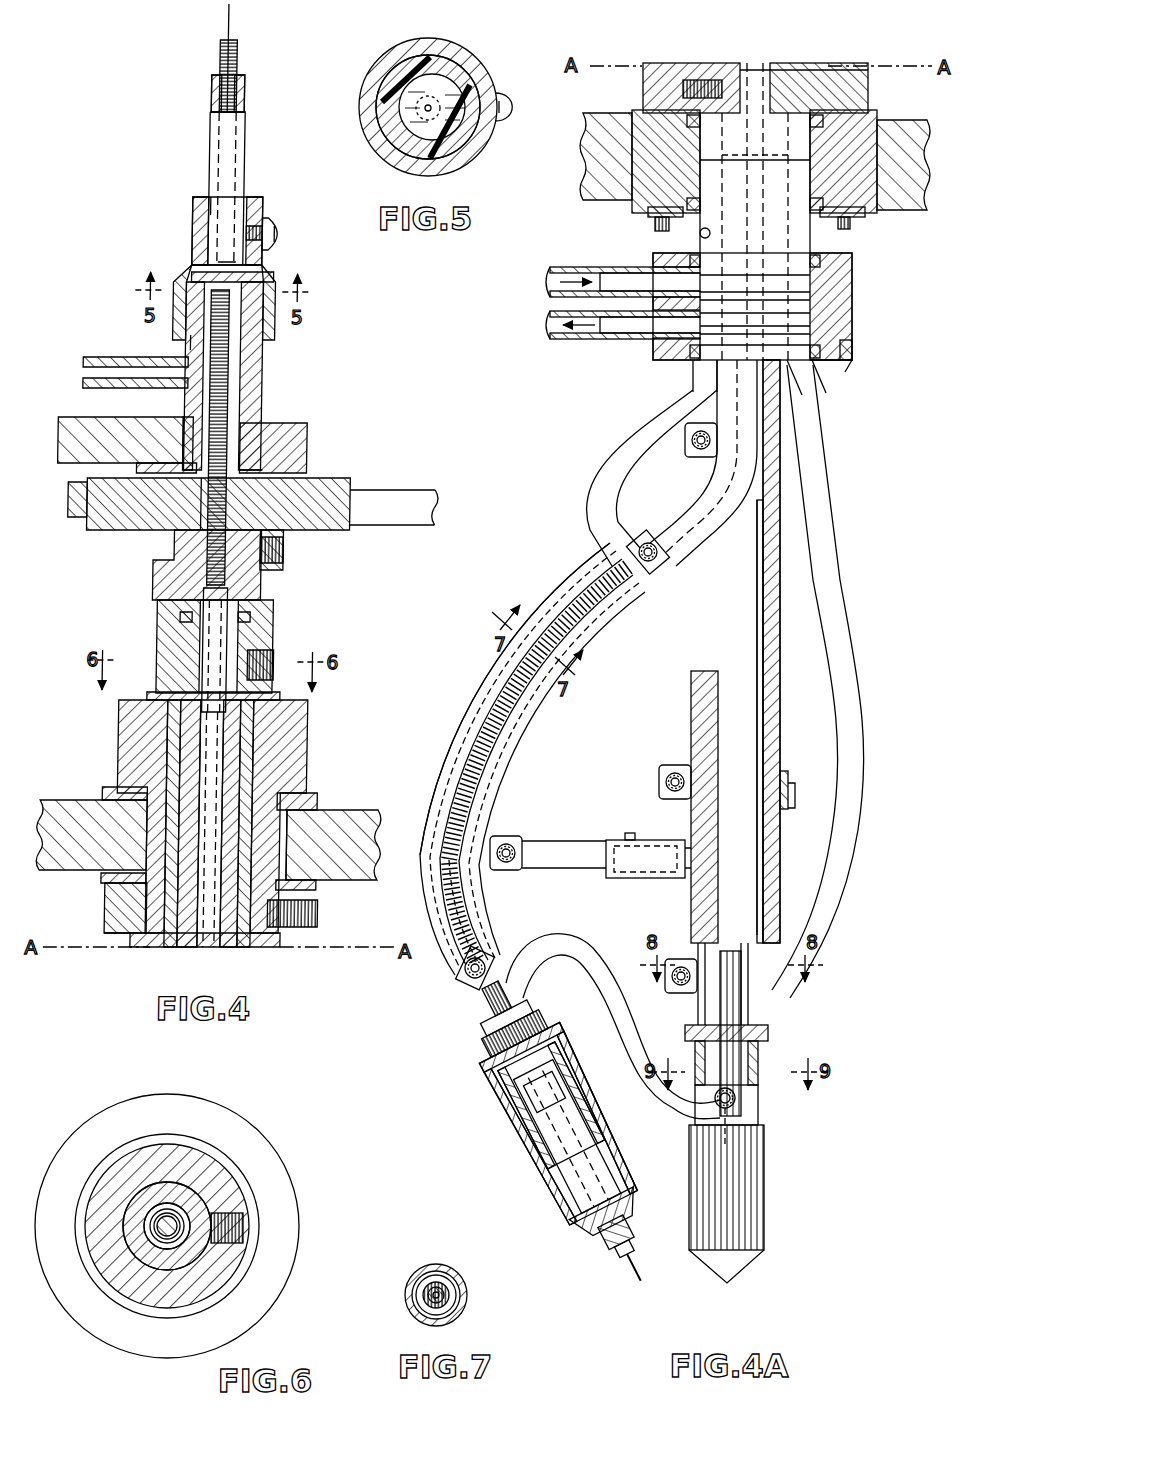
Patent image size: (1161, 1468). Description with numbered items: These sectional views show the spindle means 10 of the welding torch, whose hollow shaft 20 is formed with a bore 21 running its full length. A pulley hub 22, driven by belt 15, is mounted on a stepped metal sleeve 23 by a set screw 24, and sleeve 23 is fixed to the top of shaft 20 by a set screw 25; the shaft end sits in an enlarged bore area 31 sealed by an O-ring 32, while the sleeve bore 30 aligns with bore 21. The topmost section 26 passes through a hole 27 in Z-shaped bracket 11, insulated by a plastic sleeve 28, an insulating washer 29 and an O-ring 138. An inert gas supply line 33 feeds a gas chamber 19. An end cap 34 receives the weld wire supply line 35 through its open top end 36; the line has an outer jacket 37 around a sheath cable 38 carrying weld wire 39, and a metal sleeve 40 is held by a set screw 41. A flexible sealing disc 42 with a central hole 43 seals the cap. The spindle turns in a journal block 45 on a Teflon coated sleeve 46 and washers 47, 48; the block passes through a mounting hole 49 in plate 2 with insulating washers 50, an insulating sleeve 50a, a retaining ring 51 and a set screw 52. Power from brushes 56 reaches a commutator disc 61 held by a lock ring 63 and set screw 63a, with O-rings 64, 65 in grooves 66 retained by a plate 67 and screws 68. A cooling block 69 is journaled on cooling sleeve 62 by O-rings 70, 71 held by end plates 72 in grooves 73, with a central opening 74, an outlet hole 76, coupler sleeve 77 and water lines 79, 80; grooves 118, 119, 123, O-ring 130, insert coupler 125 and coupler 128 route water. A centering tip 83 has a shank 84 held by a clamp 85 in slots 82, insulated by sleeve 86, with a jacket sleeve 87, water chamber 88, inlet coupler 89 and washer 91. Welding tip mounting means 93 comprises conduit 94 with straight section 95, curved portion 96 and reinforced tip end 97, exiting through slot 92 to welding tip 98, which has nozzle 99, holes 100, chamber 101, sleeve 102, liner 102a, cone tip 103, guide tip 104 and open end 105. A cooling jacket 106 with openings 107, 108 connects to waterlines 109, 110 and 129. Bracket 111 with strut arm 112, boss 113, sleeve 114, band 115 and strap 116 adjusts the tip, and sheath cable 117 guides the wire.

In FIG. 4, the plate 2 is at (335, 830).
In FIG. 4, the spindle means 10 is at (103, 182).
In FIG. 4A, the spindle means 10 is at (850, 437).
In FIG. 4, the Z-shaped bracket 11 is at (100, 418).
In FIG. 4, the belt 15 is at (405, 503).
In FIG. 4, the gas chamber 19 is at (196, 343).
In FIG. 4, the hollow shaft 20 is at (252, 738).
In FIG. 6, the hollow shaft 20 is at (178, 1208).
In FIG. 4A, the hollow shaft 20 is at (782, 620).
In FIG. 4, the bore 21 is at (214, 949).
In FIG. 4A, the bore 21 is at (762, 552).
In FIG. 4, the pulley hub 22 is at (335, 490).
In FIG. 4, the stepped metal sleeve 23 is at (183, 580).
In FIG. 6, the stepped metal sleeve 23 is at (205, 1280).
In FIG. 4, the set screw 24 is at (292, 555).
In FIG. 4, the set screw 25 is at (272, 660).
In FIG. 6, the set screw 25 is at (243, 1225).
In FIG. 4, the topmost section of sleeve 26 is at (268, 386).
In FIG. 4, the hole 27 is at (262, 432).
In FIG. 4, the plastic sleeve 28 is at (280, 354).
In FIG. 4, the insulating washer 29 is at (280, 472).
In FIG. 4, the bore 30 is at (210, 532).
In FIG. 4, the enlarged bore area 31 is at (188, 648).
In FIG. 6, the enlarged bore area 31 is at (128, 1215).
In FIG. 4, the O-ring 32 is at (258, 620).
In FIG. 4, the inert gas supply line 33 is at (125, 358).
In FIG. 4, the end cap 34 is at (196, 232).
In FIG. 5, the end cap 34 is at (453, 50).
In FIG. 4, the weld wire supply line 35 is at (228, 140).
In FIG. 4, the open top end 36 is at (214, 205).
In FIG. 4, the outer jacket 37 is at (246, 90).
In FIG. 4, the weld wire sheath cable 38 is at (239, 46).
In FIG. 4, the weld wire 39 is at (226, 12).
In FIG. 5, the weld wire 39 is at (433, 112).
In FIG. 6, the weld wire 39 is at (167, 1240).
In FIG. 7, the weld wire 39 is at (443, 1288).
In FIG. 4A, the weld wire 39 is at (632, 1268).
In FIG. 4, the metal sleeve 40 is at (240, 215).
In FIG. 4, the set screw 41 is at (282, 222).
In FIG. 5, the set screw 41 is at (500, 95).
In FIG. 4, the flexible sealing disc 42 is at (262, 275).
In FIG. 5, the flexible sealing disc 42 is at (395, 70).
In FIG. 5, the central hole 43 is at (385, 75).
In FIG. 4, the journal block 45 is at (130, 741).
In FIG. 6, the journal block 45 is at (85, 1290).
In FIG. 4, the Teflon coated sleeve 46 is at (179, 772).
In FIG. 4, the Teflon coated washer 47 is at (158, 699).
In FIG. 6, the Teflon coated washer 47 is at (115, 1297).
In FIG. 4, the Teflon coated washer 48 is at (290, 950).
In FIG. 4A, the Teflon coated washer 48 is at (818, 63).
In FIG. 4, the mounting hole 49 is at (120, 900).
In FIG. 4, the insulating washers 50 is at (305, 795).
In FIG. 4, the insulating sleeve 50a is at (300, 855).
In FIG. 4, the lower metal retaining ring 51 is at (120, 930).
In FIG. 4, the set screw 52 is at (332, 922).
In FIG. 4A, the brushes 56 is at (600, 135).
In FIG. 4A, the commutator disc 61 is at (605, 178).
In FIG. 4A, the cooling sleeve 62 is at (820, 243).
In FIG. 4A, the lock ring 63 is at (868, 90).
In FIG. 4A, the set screw 63a is at (690, 78).
In FIG. 4A, the upper sealing O-ring 64 is at (877, 117).
In FIG. 4A, the lower sealing O-ring 65 is at (860, 214).
In FIG. 4A, the grooves 66 is at (687, 120).
In FIG. 4A, the plate 67 is at (652, 215).
In FIG. 4A, the screws 68 is at (660, 228).
In FIG. 4A, the cooling block 69 is at (848, 322).
In FIG. 4A, the upper sealing O-ring 70 is at (845, 275).
In FIG. 4A, the lower sealing O-ring 71 is at (838, 348).
In FIG. 4A, the end plates 72 is at (820, 262).
In FIG. 4A, the grooves 73 is at (832, 365).
In FIG. 4A, the central opening 74 is at (825, 333).
In FIG. 4A, the hole 76 is at (665, 338).
In FIG. 4A, the coupler sleeve 77 is at (625, 280).
In FIG. 4A, the cooling water inlet line 79 is at (560, 282).
In FIG. 4A, the cooling water outlet line 80 is at (562, 340).
In FIG. 4A, the axially extending slots 82 is at (768, 1022).
In FIG. 4A, the workpiece centering tip 83 is at (766, 1212).
In FIG. 4A, the shank 84 is at (741, 997).
In FIG. 4A, the clamp 85 is at (693, 993).
In FIG. 4A, the plastic insulating sleeve 86 is at (762, 908).
In FIG. 4A, the water cooled jacket sleeve 87 is at (760, 1120).
In FIG. 4A, the annular water chamber 88 is at (760, 1058).
In FIG. 4A, the inlet tube coupler 89 is at (725, 1150).
In FIG. 4A, the insulating washer 91 is at (768, 1044).
In FIG. 4A, the elongated slot 92 is at (692, 680).
In FIG. 4A, the welding tip mounting means 93 is at (572, 572).
In FIG. 7, the tubular conduit 94 is at (420, 1292).
In FIG. 4A, the tubular conduit 94 is at (615, 615).
In FIG. 4, the upper straight section 95 is at (232, 948).
In FIG. 4A, the upper straight section 95 is at (756, 62).
In FIG. 4A, the lower curved portion 96 is at (470, 713).
In FIG. 4, the reinforced tip end 97 is at (222, 620).
In FIG. 6, the reinforced tip end 97 is at (157, 1208).
In FIG. 4A, the welding tip 98 is at (520, 1180).
In FIG. 4A, the inert gas discharge nozzle 99 is at (518, 1110).
In FIG. 4A, the holes 100 is at (492, 1100).
In FIG. 4A, the gas collection chamber 101 is at (540, 1135).
In FIG. 4A, the cylindrical open ended sleeve 102 is at (600, 1115).
In FIG. 4A, the cylindrical liner 102a is at (586, 1068).
In FIG. 4A, the cone tip 103 is at (572, 1218).
In FIG. 4A, the weld wire guide tip 104 is at (598, 1228).
In FIG. 4A, the open end 105 is at (612, 1250).
In FIG. 7, the cooling jacket 106 is at (438, 1265).
In FIG. 4A, the cooling jacket 106 is at (490, 665).
In FIG. 4A, the inlet opening 107 is at (660, 565).
In FIG. 4A, the outlet opening 108 is at (465, 975).
In FIG. 4A, the waterline 109 is at (625, 440).
In FIG. 4A, the waterline 110 is at (588, 995).
In FIG. 4A, the bracket 111 is at (638, 878).
In FIG. 4A, the strut arm 112 is at (570, 841).
In FIG. 4A, the elongated boss 113 is at (626, 833).
In FIG. 4A, the slidably mounted sleeve 114 is at (786, 795).
In FIG. 4A, the band 115 is at (796, 808).
In FIG. 4A, the strap 116 is at (506, 836).
In FIG. 4, the sheath cable 117 is at (236, 352).
In FIG. 6, the sheath cable 117 is at (170, 1213).
In FIG. 7, the sheath cable 117 is at (428, 1300).
In FIG. 4A, the sheath cable 117 is at (482, 905).
In FIG. 4A, the upper groove 118 is at (793, 290).
In FIG. 4A, the intermediate groove 119 is at (753, 303).
In FIG. 4A, the fourth peripheral groove 123 is at (752, 158).
In FIG. 4A, the insert coupler 125 is at (697, 372).
In FIG. 4A, the waterline coupler 128 is at (815, 380).
In FIG. 4A, the waterline 129 is at (870, 692).
In FIG. 4A, the O-ring 130 is at (825, 312).
In FIG. 4, the O-ring 138 is at (190, 420).